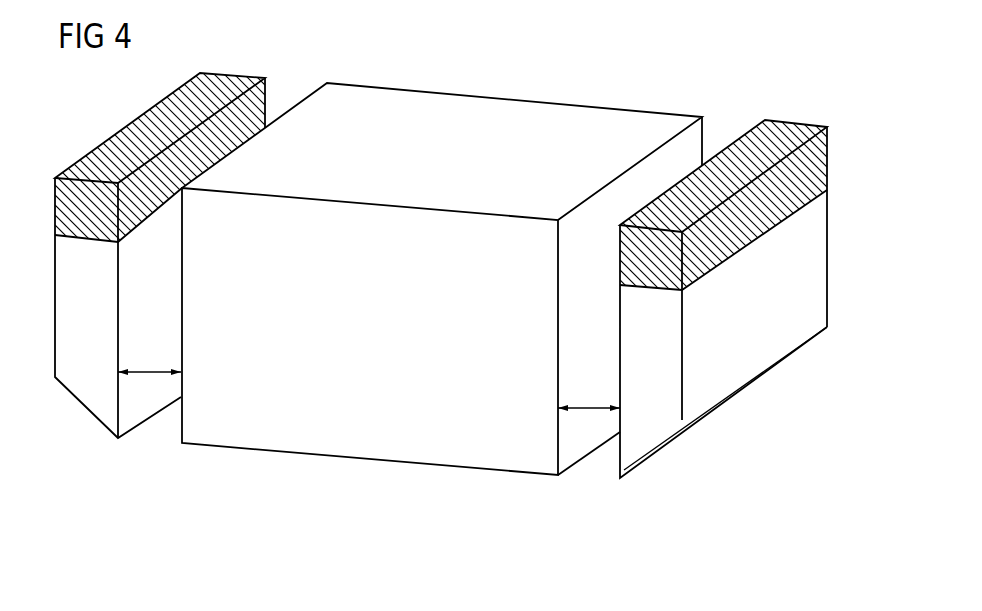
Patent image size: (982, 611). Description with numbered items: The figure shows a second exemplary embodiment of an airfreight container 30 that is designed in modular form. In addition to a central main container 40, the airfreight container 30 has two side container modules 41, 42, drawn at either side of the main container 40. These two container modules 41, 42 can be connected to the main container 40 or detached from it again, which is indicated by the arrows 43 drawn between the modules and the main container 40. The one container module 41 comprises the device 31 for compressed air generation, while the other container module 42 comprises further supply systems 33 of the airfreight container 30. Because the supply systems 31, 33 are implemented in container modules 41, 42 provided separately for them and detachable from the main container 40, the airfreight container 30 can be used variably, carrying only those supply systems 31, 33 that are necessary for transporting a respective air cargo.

The airfreight container 30 is at (660, 80).
The device for compressed air generation 31 is at (785, 132).
The further supply systems 33 is at (130, 125).
The main container 40 is at (360, 448).
The container module 41 is at (713, 392).
The container module 42 is at (93, 400).
The arrows 43 is at (150, 368).